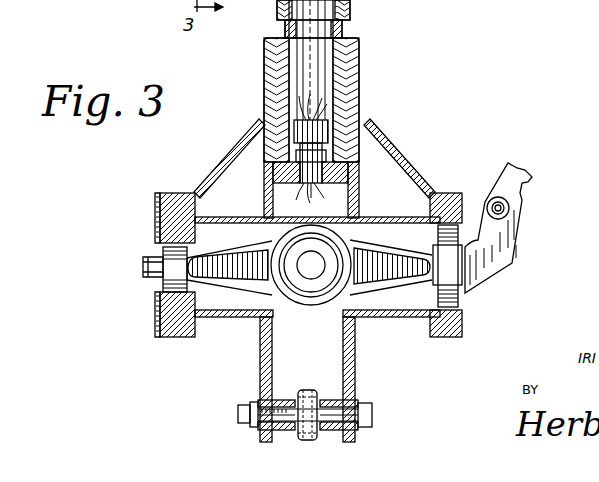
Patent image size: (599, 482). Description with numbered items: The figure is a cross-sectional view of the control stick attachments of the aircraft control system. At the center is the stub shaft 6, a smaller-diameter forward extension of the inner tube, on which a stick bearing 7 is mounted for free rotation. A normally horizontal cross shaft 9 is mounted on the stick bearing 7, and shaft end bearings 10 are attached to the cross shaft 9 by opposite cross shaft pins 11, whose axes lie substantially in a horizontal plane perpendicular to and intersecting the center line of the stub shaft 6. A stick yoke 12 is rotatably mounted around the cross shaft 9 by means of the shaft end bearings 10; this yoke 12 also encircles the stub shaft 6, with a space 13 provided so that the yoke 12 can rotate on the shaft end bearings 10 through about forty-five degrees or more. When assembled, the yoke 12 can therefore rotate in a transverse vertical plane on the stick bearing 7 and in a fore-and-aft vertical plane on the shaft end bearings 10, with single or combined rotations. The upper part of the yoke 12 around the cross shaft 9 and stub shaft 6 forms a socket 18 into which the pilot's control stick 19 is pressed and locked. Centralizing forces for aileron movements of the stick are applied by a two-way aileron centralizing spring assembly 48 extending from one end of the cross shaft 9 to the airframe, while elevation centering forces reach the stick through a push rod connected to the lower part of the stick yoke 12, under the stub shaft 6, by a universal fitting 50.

The stub shaft 6 is at (338, 243).
The stick bearing 7 is at (313, 298).
The cross shaft 9 is at (386, 284).
The shaft end bearing 10 is at (173, 268).
The cross shaft pin 11 is at (150, 274).
The stick yoke 12 is at (410, 316).
The space 13 is at (298, 218).
The socket 18 is at (360, 97).
The pilot's control stick 19 is at (350, 15).
The two-way aileron centralizing spring assembly 48 is at (525, 190).
The universal fitting 50 is at (312, 432).